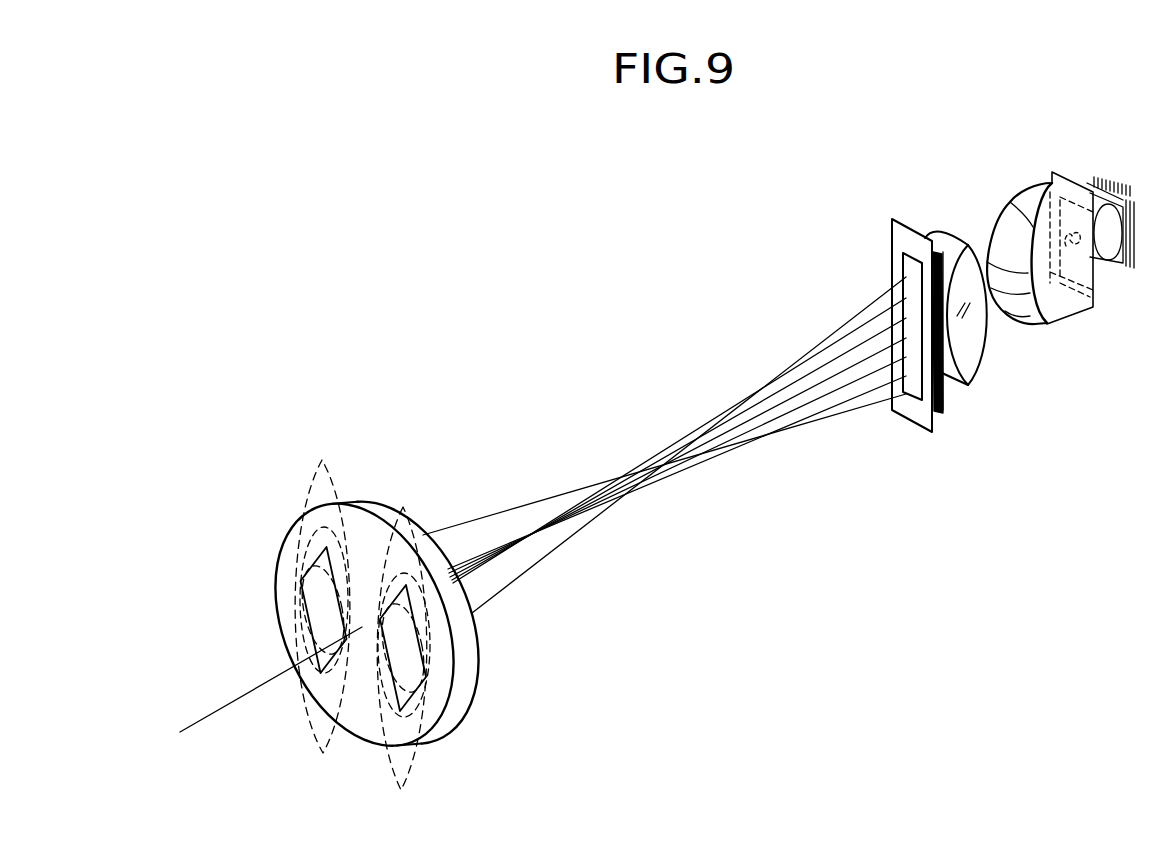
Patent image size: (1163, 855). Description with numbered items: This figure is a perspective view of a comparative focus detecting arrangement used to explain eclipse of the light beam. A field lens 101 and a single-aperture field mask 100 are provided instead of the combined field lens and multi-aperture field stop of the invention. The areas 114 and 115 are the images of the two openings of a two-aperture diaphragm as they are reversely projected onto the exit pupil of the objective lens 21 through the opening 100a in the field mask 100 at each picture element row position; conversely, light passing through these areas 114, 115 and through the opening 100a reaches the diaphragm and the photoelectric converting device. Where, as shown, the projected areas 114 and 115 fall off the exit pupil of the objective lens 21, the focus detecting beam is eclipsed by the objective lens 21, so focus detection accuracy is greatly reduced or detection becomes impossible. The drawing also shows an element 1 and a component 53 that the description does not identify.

The rotation axis of filter disc 1 is at (218, 712).
The objective lens 21 is at (470, 674).
The image of diaphragm opening 114 is at (322, 745).
The image of diaphragm opening 115 is at (303, 483).
The single-aperture field mask 100 is at (912, 400).
The opening in the field mask 100a is at (903, 260).
The field lens 101 is at (973, 362).
The light source 53 is at (1090, 312).